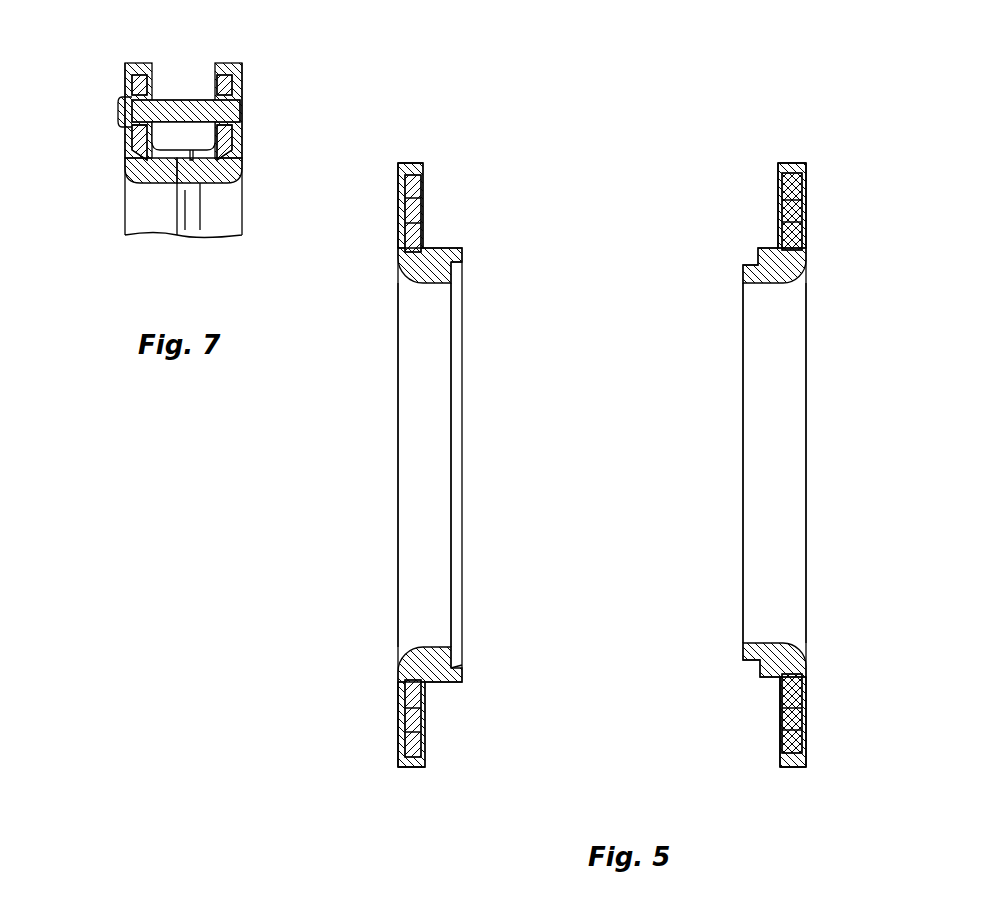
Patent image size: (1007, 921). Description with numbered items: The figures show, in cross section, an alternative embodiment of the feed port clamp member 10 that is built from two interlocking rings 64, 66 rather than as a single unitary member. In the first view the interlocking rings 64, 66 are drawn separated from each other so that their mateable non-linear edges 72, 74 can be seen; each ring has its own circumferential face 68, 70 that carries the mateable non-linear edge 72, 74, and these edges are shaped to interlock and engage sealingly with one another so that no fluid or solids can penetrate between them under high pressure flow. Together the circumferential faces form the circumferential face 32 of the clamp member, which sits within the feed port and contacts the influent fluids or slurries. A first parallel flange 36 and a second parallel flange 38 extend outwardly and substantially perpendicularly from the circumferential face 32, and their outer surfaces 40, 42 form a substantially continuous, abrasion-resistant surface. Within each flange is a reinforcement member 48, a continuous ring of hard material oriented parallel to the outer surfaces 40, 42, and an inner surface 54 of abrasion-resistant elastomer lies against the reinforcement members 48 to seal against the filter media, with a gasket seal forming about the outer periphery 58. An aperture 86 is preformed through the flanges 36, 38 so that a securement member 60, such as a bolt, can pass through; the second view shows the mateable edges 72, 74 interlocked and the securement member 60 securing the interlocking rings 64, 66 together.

In FIG. 7, the feed port clamp member 10 is at (145, 245).
In FIG. 5, the feed port clamp member 10 is at (600, 247).
In FIG. 7, the circumferential face 32 is at (203, 210).
In FIG. 7, the first parallel flange 36 is at (242, 92).
In FIG. 5, the first parallel flange 36 is at (806, 165).
In FIG. 7, the second parallel flange 38 is at (125, 70).
In FIG. 5, the second parallel flange 38 is at (398, 170).
In FIG. 5, the outer surface of first parallel flange 40 is at (806, 185).
In FIG. 5, the outer surface of second parallel flange 42 is at (398, 250).
In FIG. 7, the reinforcement member 48 is at (227, 140).
In FIG. 5, the reinforcement member 48 is at (420, 185).
In FIG. 7, the inner surface 54 is at (150, 75).
In FIG. 5, the inner surface 54 is at (421, 215).
In FIG. 5, the outer periphery 58 is at (405, 163).
In FIG. 7, the securement member 60 is at (182, 112).
In FIG. 5, the interlocking ring 64 is at (820, 530).
In FIG. 5, the interlocking ring 66 is at (360, 530).
In FIG. 7, the circumferential face 68 is at (200, 183).
In FIG. 5, the circumferential face 68 is at (768, 288).
In FIG. 7, the circumferential face 70 is at (137, 185).
In FIG. 5, the circumferential face 70 is at (418, 300).
In FIG. 7, the mateable non-linear edge 72 is at (240, 170).
In FIG. 5, the mateable non-linear edge 72 is at (758, 262).
In FIG. 7, the mateable non-linear edge 74 is at (127, 173).
In FIG. 5, the mateable non-linear edge 74 is at (458, 265).
In FIG. 7, the aperture 86 is at (120, 98).
In FIG. 5, the aperture 86 is at (405, 223).